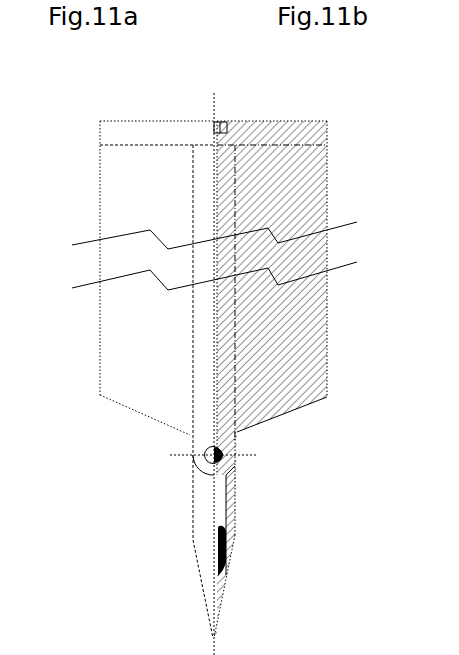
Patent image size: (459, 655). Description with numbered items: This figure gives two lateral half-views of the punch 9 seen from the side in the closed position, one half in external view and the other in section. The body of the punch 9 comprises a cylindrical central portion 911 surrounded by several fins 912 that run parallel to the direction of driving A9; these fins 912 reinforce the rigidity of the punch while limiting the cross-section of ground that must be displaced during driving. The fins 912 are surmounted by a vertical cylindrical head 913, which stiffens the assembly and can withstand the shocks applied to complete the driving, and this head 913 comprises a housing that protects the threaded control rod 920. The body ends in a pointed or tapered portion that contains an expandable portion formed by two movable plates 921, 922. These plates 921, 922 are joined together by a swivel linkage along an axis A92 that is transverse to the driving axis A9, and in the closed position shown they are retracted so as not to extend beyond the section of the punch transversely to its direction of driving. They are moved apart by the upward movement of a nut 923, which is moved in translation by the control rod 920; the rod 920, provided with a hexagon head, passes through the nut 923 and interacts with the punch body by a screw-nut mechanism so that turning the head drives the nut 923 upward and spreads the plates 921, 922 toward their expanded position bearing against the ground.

In FIG. 11b, the punch 9 is at (338, 188).
In FIG. 11a, the cylindrical central portion 911 is at (200, 218).
In FIG. 11a, the fins 912 is at (123, 181).
In FIG. 11a, the vertical cylindrical head 913 is at (152, 128).
In FIG. 11b, the control rod 920 is at (222, 120).
In FIG. 11a, the movable plate 921 is at (200, 510).
In FIG. 11b, the movable plate 922 is at (236, 513).
In FIG. 11b, the nut 923 is at (226, 546).
In FIG. 11b, the swivel axis A92 is at (458, 447).
In FIG. 11b, the driving axis A9 is at (236, 654).